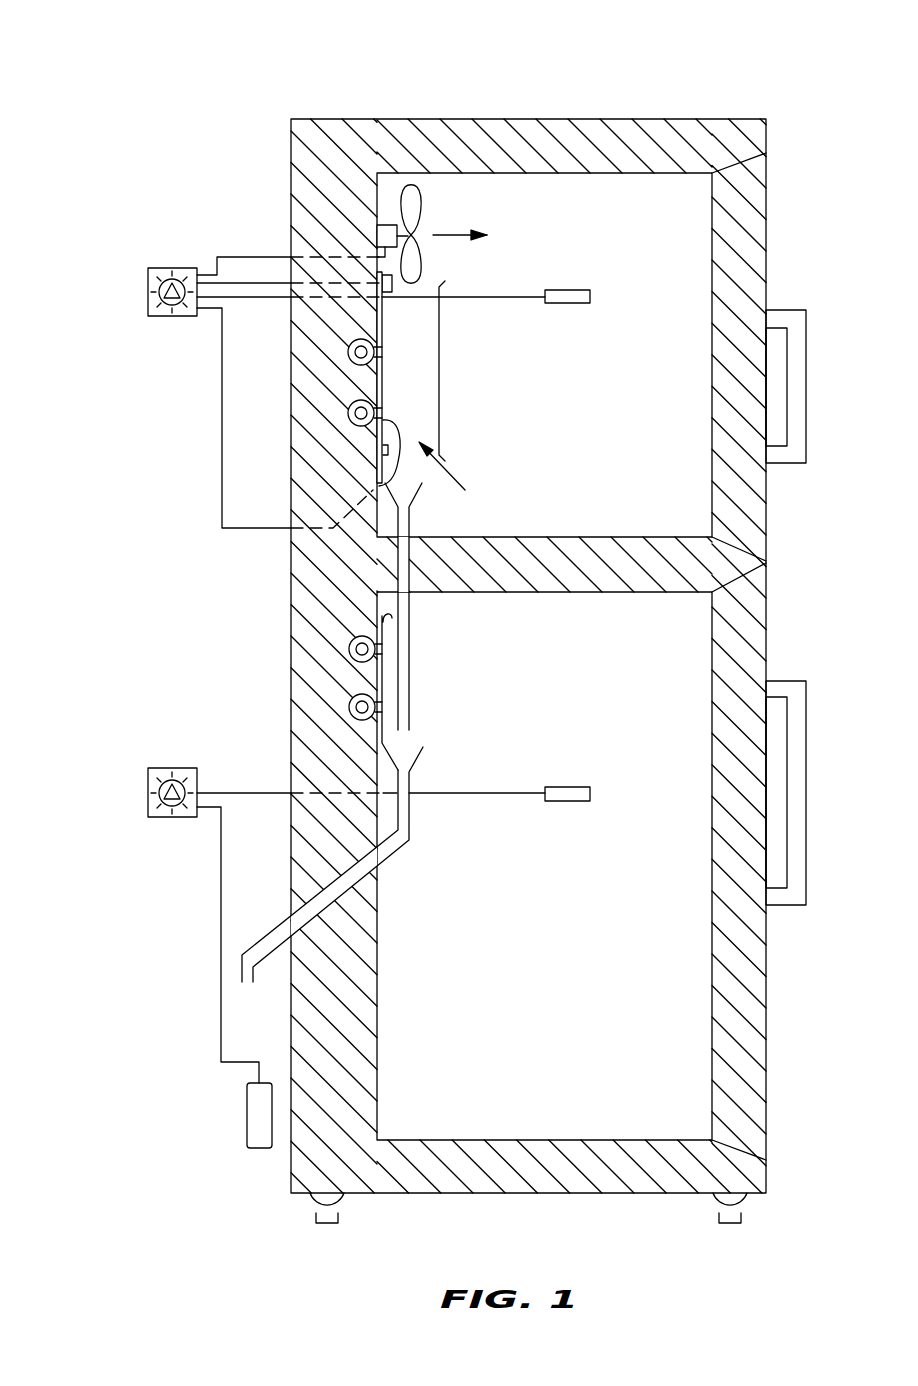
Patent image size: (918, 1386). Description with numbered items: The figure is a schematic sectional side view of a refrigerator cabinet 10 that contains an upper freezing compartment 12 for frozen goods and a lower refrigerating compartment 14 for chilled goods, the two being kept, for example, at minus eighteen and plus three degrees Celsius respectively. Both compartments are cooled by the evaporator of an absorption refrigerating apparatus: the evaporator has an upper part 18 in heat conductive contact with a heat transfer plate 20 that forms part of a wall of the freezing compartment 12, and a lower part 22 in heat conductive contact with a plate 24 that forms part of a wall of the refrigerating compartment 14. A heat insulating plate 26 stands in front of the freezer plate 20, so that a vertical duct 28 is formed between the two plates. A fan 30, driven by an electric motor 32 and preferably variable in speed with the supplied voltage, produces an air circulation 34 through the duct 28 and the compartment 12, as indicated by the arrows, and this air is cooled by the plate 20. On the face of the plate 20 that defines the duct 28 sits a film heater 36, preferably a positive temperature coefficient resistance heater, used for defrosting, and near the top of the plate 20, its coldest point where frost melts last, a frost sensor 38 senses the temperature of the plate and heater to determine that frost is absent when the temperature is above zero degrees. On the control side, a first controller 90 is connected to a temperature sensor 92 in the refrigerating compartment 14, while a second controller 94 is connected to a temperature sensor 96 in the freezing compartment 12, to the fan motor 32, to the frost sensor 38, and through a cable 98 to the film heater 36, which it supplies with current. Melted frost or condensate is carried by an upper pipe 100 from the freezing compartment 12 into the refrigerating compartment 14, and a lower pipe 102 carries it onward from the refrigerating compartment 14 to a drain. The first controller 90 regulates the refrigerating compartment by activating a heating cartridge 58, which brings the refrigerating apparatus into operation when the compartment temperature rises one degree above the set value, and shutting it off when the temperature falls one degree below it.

The refrigerator cabinet 10 is at (652, 118).
The freezing compartment 12 is at (652, 494).
The refrigerating compartment 14 is at (570, 1014).
The upper part of evaporator 18 is at (348, 413).
The heat transfer plate 20 is at (380, 468).
The lower part of evaporator 22 is at (349, 707).
The plate 24 is at (383, 613).
The heat insulating plate 26 is at (441, 398).
The vertical duct 28 is at (416, 373).
The fan 30 is at (411, 200).
The electric motor 32 is at (386, 236).
The air circulation 34 is at (452, 236).
The film heater 36 is at (383, 487).
The frost sensor 38 is at (392, 291).
The heating cartridge 58 is at (247, 1118).
The first controller 90 is at (148, 785).
The temperature sensor 92 is at (566, 787).
The second controller 94 is at (148, 292).
The temperature sensor 96 is at (566, 289).
The cable 98 is at (222, 432).
The upper pipe 100 is at (397, 560).
The lower pipe 102 is at (265, 933).